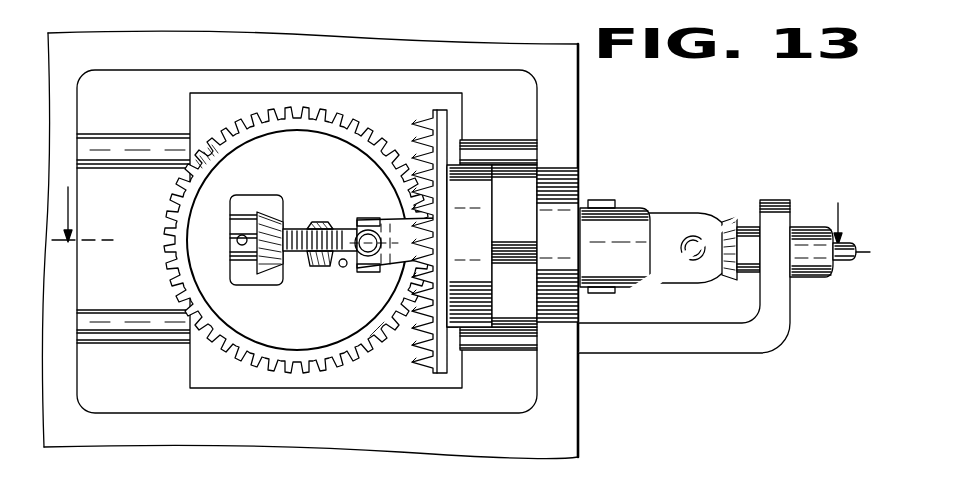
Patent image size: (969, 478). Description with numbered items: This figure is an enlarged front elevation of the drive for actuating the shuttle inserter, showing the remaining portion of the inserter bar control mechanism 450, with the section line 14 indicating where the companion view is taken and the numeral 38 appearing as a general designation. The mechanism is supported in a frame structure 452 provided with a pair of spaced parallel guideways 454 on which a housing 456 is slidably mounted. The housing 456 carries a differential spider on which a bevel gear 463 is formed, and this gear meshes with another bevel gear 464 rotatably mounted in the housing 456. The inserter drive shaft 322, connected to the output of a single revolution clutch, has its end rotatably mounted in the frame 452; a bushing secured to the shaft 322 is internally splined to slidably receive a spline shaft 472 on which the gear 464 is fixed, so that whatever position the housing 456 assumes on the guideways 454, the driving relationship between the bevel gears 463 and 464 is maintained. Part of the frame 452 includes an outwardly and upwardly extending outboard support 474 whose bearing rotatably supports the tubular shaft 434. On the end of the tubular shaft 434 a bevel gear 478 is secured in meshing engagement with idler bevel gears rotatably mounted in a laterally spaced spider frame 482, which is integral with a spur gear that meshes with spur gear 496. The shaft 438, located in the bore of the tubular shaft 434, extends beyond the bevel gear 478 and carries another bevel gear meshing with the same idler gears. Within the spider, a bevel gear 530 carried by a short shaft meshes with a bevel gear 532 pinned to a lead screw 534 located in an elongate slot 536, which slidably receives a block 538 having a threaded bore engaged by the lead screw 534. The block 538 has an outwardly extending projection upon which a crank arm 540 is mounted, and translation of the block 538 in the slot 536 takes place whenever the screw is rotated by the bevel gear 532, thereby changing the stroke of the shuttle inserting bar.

The apparatus 38 is at (592, 133).
The inserter bar control mechanism 450 is at (230, 83).
The frame structure 452 is at (553, 432).
The spaced parallel guideways 454 is at (143, 155).
The housing 456 is at (383, 110).
The bevel gear 463 is at (310, 112).
The bevel gear 464 is at (440, 130).
The spline shaft 472 is at (512, 240).
The outboard support 474 is at (725, 340).
The bevel gear 478 is at (730, 280).
The spider frame 482 is at (698, 213).
The spur gear 496 is at (602, 200).
The inserter drive shaft 322 is at (638, 212).
The tubular shaft 434 is at (798, 230).
The shaft 438 is at (850, 263).
The bevel gear 530 is at (292, 228).
The bevel gear 532 is at (272, 270).
The lead screw 534 is at (303, 240).
The elongate slot 536 is at (342, 263).
The block 538 is at (368, 218).
The crank arm 540 is at (420, 232).
The section line 14 is at (447, 216).